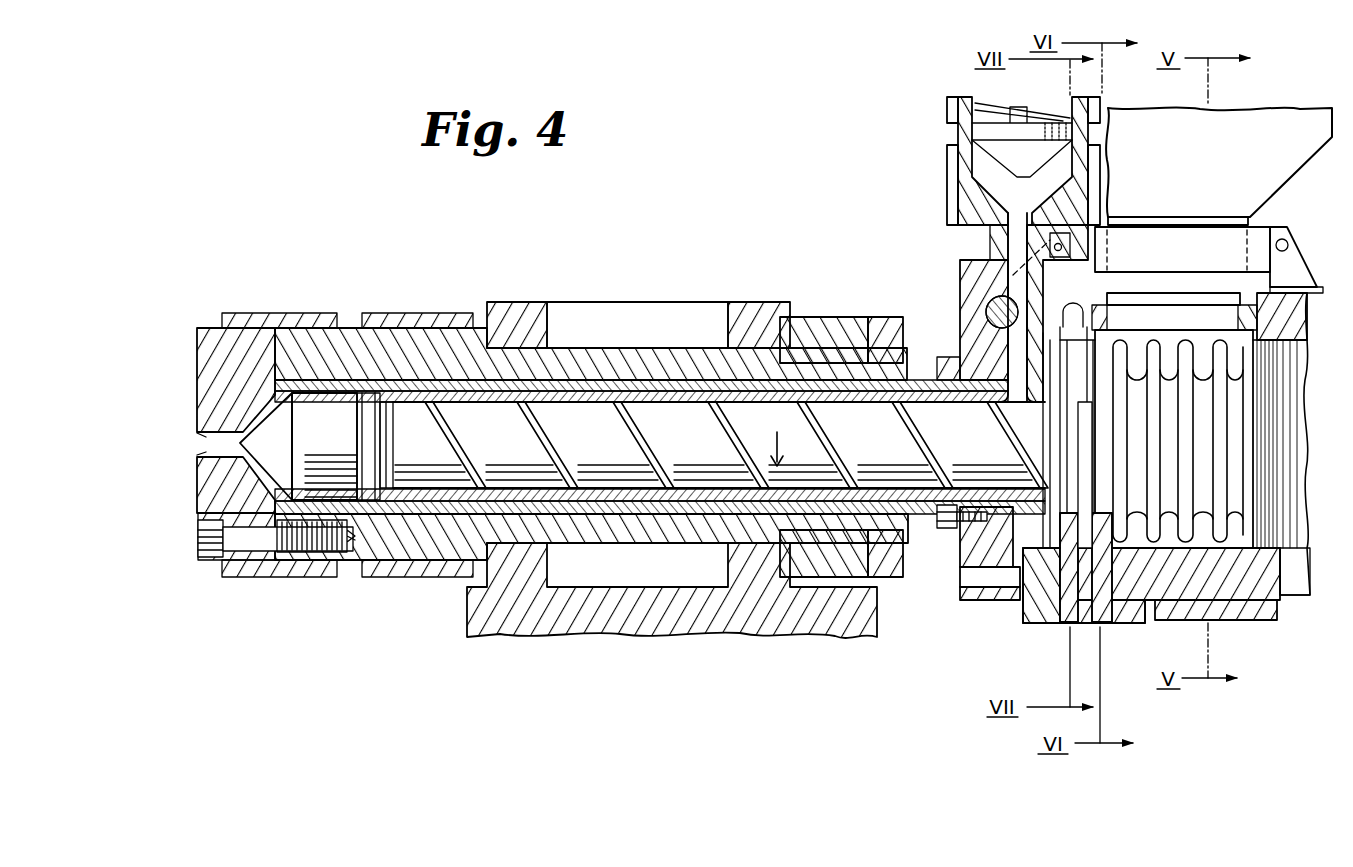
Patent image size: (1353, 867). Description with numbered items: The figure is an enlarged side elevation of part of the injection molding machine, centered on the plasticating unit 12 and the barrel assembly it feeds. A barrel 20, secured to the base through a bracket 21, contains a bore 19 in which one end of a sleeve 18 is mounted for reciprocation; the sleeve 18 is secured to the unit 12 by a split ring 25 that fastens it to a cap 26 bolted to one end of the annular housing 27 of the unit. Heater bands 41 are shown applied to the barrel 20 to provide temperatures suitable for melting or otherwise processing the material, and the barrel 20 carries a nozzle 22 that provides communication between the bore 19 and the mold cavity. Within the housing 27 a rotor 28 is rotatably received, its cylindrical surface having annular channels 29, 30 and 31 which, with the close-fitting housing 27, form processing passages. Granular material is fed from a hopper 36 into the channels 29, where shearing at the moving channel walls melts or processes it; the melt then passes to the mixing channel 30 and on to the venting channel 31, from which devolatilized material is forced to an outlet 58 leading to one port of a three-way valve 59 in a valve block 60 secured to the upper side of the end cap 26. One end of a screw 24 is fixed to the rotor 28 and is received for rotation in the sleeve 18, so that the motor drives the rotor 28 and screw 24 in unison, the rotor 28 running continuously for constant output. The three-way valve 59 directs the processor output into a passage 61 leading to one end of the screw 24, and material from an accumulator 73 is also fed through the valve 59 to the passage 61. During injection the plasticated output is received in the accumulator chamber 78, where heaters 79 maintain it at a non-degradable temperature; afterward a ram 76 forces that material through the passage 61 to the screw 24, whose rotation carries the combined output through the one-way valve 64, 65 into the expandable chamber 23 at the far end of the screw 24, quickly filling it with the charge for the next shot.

The plasticating unit 12 is at (1037, 640).
The sleeve 18 is at (923, 385).
The bore 19 is at (588, 398).
The barrel 20 is at (425, 333).
The bracket 21 is at (510, 303).
The nozzle 22 is at (195, 375).
The expandable chamber 23 is at (274, 407).
The screw 24 is at (848, 448).
The split ring 25 is at (953, 536).
The cap 26 is at (960, 592).
The annular housing 27 is at (1178, 622).
The rotor 28 is at (1008, 535).
The annular channels 29 is at (1238, 350).
The mixing channel 30 is at (1103, 428).
The venting channel 31 is at (1066, 406).
The hopper 36 is at (1240, 113).
The heater bands 41 is at (362, 577).
The outlet 58 is at (1082, 284).
The three-way valve 59 is at (1000, 300).
The valve block 60 is at (962, 302).
The passage 61 is at (1012, 355).
The non-return valve 64 is at (322, 396).
The one-way valve 65 is at (372, 400).
The accumulator 73 is at (957, 133).
The ram 76 is at (1072, 130).
The accumulator chamber 78 is at (1068, 163).
The heaters 79 is at (947, 108).